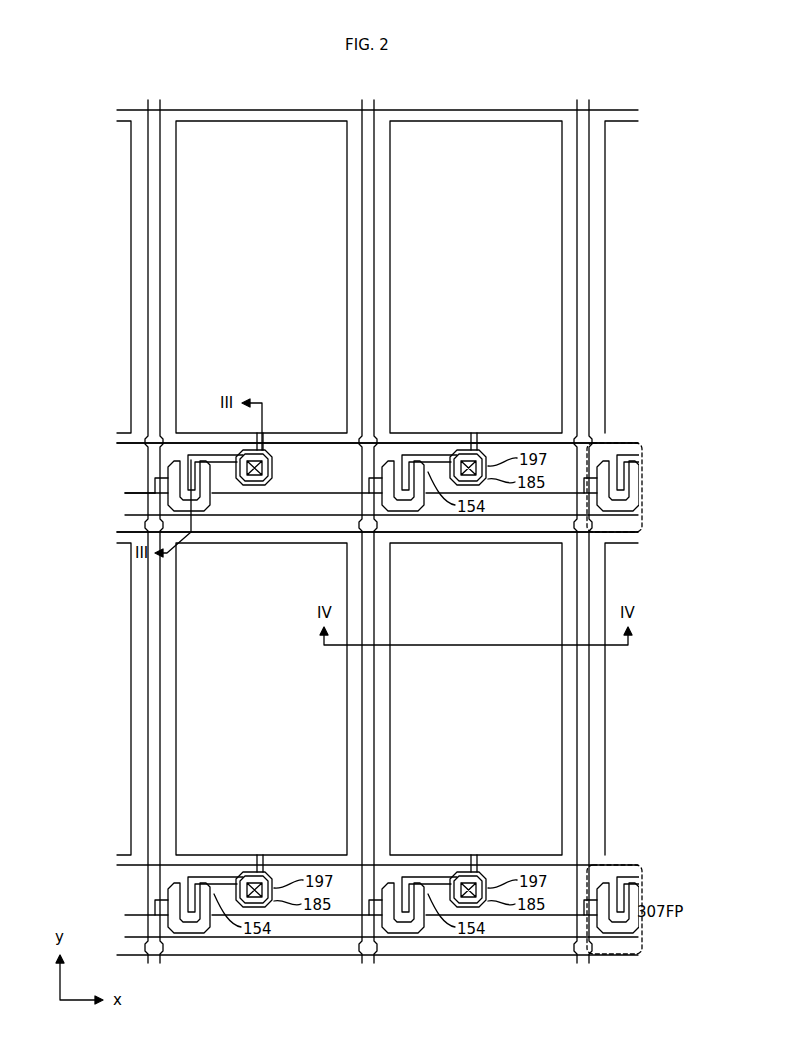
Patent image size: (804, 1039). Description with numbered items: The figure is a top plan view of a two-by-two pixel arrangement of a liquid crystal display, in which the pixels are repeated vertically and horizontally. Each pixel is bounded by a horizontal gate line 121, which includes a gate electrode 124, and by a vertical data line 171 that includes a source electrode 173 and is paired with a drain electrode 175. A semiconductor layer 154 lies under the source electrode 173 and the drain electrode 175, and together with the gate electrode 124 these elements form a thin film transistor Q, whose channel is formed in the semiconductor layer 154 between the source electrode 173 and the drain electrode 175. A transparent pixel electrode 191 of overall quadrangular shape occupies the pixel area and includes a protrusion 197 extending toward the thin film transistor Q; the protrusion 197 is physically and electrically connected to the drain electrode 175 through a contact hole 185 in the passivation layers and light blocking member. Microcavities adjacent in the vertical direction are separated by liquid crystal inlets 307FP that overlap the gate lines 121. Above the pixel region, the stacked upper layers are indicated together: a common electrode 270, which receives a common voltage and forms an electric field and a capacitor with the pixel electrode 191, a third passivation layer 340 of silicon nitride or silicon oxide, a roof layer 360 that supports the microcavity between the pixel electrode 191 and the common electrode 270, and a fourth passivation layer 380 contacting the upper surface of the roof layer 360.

The pixel electrode 191 is at (176, 177).
The data line 171 is at (158, 300).
The gate line 121 is at (133, 505).
The gate electrode 124 is at (160, 469).
The semiconductor layer 154 is at (214, 472).
The source electrode 173 is at (132, 513).
The drain electrode 175 is at (187, 458).
The contact hole 185 is at (274, 479).
The protrusion 197 is at (285, 462).
The thin film transistor Q is at (199, 492).
The liquid crystal inlet 307FP is at (639, 487).
The common electrode 270 is at (411, 488).
The third passivation layer 340 is at (411, 488).
The roof layer 360 is at (411, 488).
The fourth passivation layer 380 is at (597, 452).